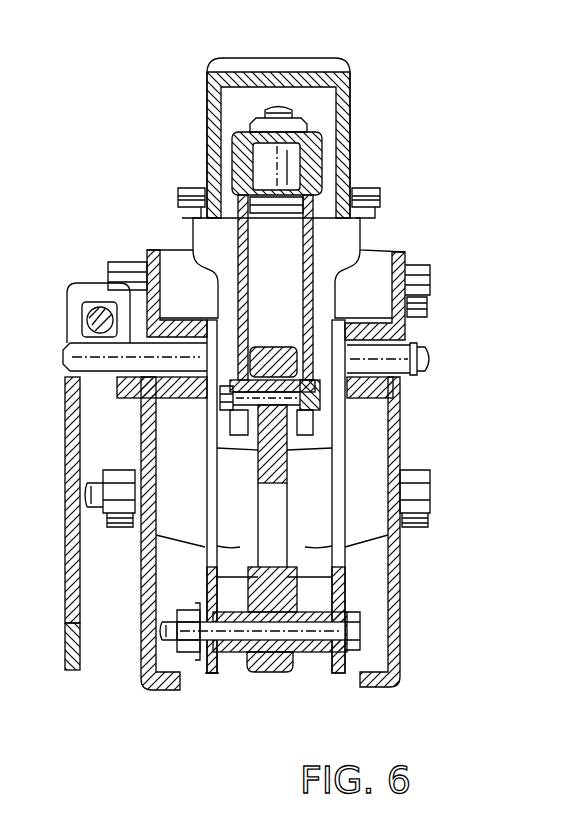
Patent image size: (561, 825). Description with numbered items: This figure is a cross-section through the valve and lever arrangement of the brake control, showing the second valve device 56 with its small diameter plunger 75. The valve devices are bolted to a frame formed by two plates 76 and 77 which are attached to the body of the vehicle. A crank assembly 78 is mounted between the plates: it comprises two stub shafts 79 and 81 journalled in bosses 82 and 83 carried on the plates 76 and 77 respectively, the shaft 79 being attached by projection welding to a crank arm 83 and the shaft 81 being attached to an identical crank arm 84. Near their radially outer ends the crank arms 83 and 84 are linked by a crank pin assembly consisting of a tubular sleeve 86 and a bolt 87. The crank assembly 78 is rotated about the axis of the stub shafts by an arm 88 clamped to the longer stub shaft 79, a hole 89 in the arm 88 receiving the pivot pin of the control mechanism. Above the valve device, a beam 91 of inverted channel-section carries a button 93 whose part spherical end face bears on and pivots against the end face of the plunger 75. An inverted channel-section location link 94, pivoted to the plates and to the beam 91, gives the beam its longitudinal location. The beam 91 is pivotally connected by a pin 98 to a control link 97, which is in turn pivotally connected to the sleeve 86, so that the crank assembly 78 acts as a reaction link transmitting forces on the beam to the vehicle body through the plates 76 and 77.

The second valve device 56 is at (363, 240).
The small diameter plunger 75 is at (252, 192).
The plate 76 is at (157, 688).
The plate 77 is at (401, 657).
The crank assembly 78 is at (204, 677).
The stub shaft 79 is at (75, 362).
The stub shaft 81 is at (402, 372).
The boss 82 is at (160, 399).
The crank arm 83 is at (207, 555).
The crank arm 84 is at (338, 593).
The tubular sleeve 86 is at (233, 655).
The bolt 87 is at (313, 633).
The arm 88 is at (73, 527).
The hole 89 is at (72, 635).
The beam 91 is at (243, 240).
The button 93 is at (297, 157).
The location link 94 is at (312, 63).
The control link 97 is at (270, 535).
The pin 98 is at (314, 436).